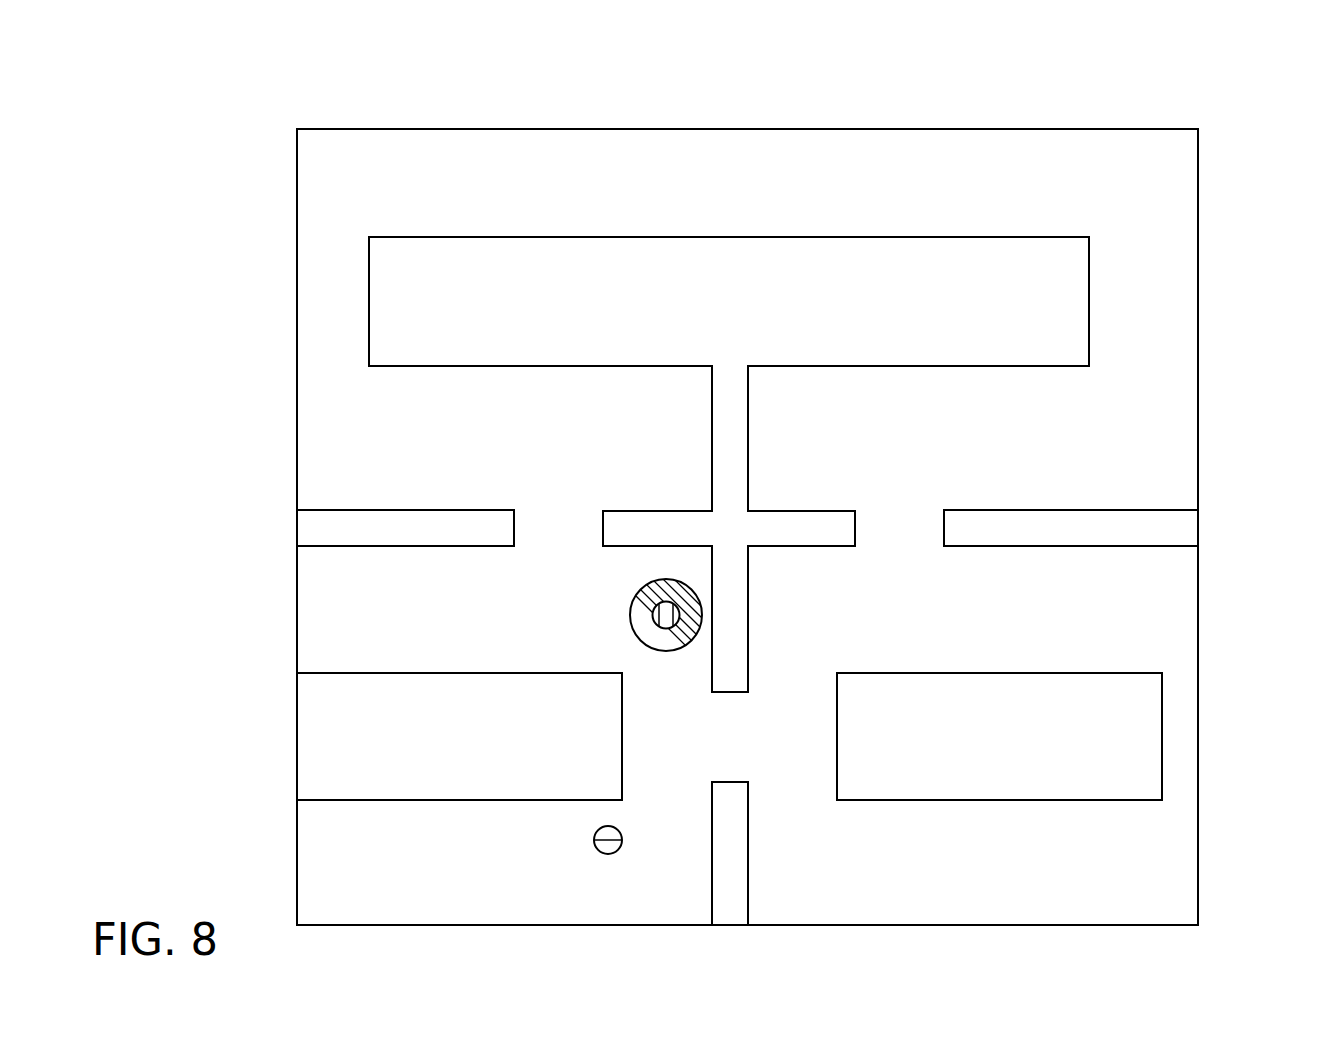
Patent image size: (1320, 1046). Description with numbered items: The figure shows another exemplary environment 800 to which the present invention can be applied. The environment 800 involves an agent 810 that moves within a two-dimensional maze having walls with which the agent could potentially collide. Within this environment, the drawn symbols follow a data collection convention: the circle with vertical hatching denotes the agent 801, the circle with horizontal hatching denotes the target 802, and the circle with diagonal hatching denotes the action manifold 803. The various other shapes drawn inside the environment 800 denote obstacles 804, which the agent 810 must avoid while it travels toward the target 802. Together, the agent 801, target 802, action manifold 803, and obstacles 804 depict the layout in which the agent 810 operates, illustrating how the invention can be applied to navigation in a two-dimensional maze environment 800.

The environment 800 is at (190, 75).
The agent 801 is at (652, 616).
The target 802 is at (638, 590).
The action manifold 803 is at (595, 840).
The obstacles 804 is at (405, 129).
The agent 810 is at (1198, 128).